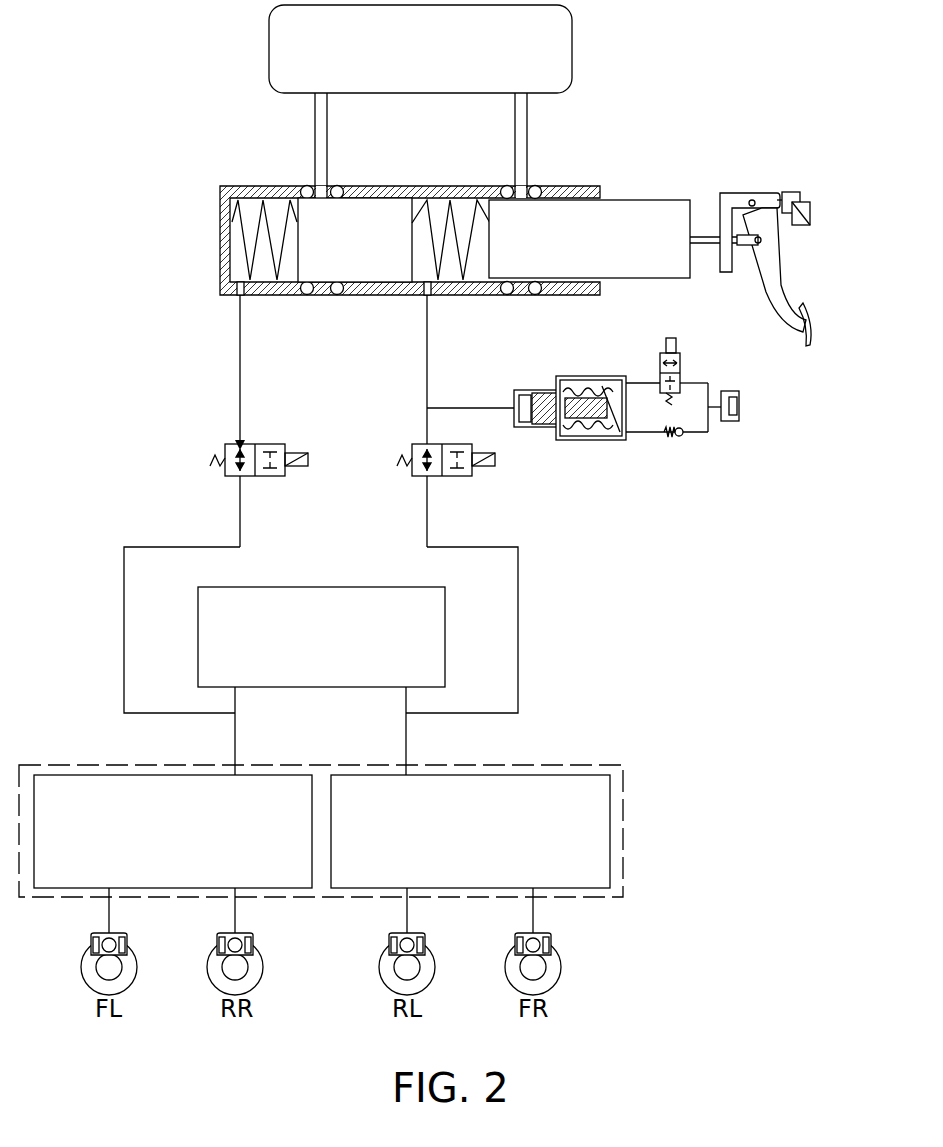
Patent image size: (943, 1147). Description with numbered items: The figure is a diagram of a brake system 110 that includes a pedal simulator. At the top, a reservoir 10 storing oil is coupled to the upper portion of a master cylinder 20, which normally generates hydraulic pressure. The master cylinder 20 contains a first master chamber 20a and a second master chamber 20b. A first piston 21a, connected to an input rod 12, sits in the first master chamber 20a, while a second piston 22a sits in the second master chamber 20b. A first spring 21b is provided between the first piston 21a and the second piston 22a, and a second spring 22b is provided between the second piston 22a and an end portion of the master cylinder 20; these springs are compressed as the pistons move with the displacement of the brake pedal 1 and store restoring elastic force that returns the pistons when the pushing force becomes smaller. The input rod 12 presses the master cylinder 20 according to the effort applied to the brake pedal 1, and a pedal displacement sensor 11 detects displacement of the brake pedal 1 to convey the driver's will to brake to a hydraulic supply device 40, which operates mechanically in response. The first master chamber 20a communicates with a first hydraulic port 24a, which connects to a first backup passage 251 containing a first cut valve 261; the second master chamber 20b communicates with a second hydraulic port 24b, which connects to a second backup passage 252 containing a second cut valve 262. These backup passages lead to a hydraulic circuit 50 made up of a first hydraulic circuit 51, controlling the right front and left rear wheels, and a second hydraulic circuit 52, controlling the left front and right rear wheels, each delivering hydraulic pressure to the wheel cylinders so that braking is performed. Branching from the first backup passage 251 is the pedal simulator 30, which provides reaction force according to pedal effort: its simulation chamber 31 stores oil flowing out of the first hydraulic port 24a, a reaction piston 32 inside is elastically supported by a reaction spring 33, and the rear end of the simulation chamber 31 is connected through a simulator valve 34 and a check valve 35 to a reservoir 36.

The brake system 110 is at (70, 28).
The reservoir 10 is at (434, 58).
The master cylinder 20 is at (225, 210).
The first master chamber 20a is at (460, 198).
The second master chamber 20b is at (281, 196).
The first piston 21a is at (650, 212).
The first spring 21b is at (465, 268).
The second piston 22a is at (365, 210).
The second spring 22b is at (243, 243).
The first hydraulic port 24a is at (427, 298).
The second hydraulic port 24b is at (222, 295).
The input rod 12 is at (703, 234).
The pedal displacement sensor 11 is at (807, 201).
The brake pedal 1 is at (778, 262).
The first backup passage 251 is at (427, 353).
The second backup passage 252 is at (240, 353).
The first cut valve 261 is at (412, 450).
The second cut valve 262 is at (225, 450).
The pedal simulator 30 is at (651, 397).
The simulation chamber 31 is at (603, 373).
The reaction piston 32 is at (546, 392).
The reaction spring 33 is at (565, 388).
The simulator valve 34 is at (672, 352).
The check valve 35 is at (681, 437).
The reservoir 36 is at (740, 407).
The hydraulic supply device 40 is at (334, 651).
The hydraulic circuit 50 is at (321, 802).
The first hydraulic circuit 51 is at (483, 846).
The second hydraulic circuit 52 is at (186, 846).